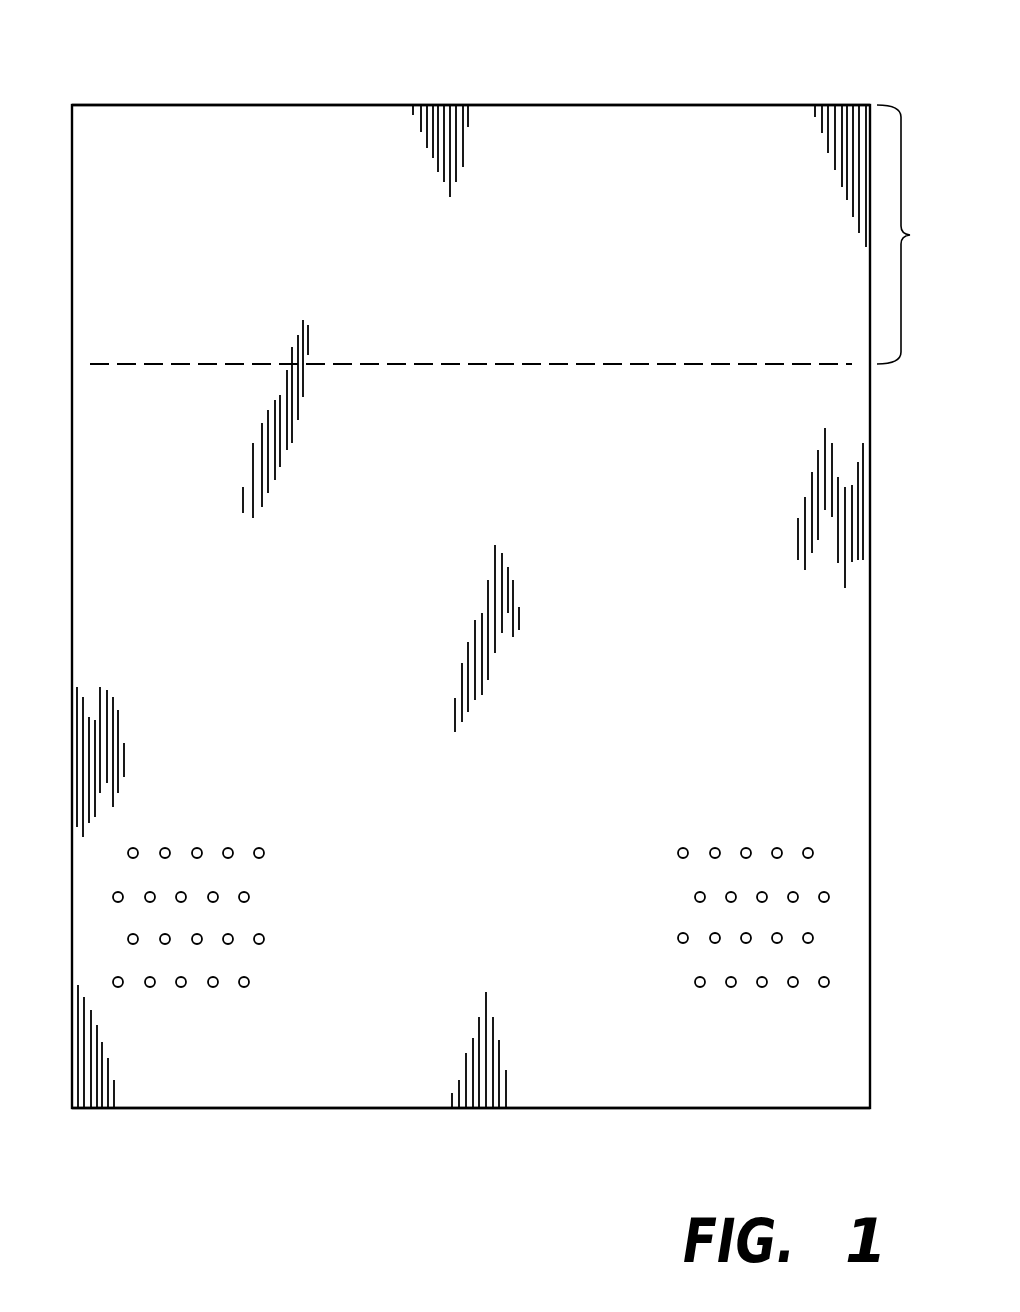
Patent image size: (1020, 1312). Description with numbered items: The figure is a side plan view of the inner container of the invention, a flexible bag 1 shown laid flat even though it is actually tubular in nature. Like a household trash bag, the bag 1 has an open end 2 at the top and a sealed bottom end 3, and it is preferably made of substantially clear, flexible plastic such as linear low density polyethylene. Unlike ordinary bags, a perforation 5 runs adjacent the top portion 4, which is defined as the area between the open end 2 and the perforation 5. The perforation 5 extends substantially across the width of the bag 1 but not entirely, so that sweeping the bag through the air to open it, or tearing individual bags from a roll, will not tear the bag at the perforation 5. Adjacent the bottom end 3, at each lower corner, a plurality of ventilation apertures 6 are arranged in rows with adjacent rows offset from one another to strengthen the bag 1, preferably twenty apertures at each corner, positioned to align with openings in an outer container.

The flexible bag 1 is at (662, 673).
The open end 2 is at (568, 105).
The sealed bottom end 3 is at (415, 1108).
The top portion 4 is at (905, 234).
The perforation 5 is at (675, 363).
The ventilation apertures 6 is at (259, 849).